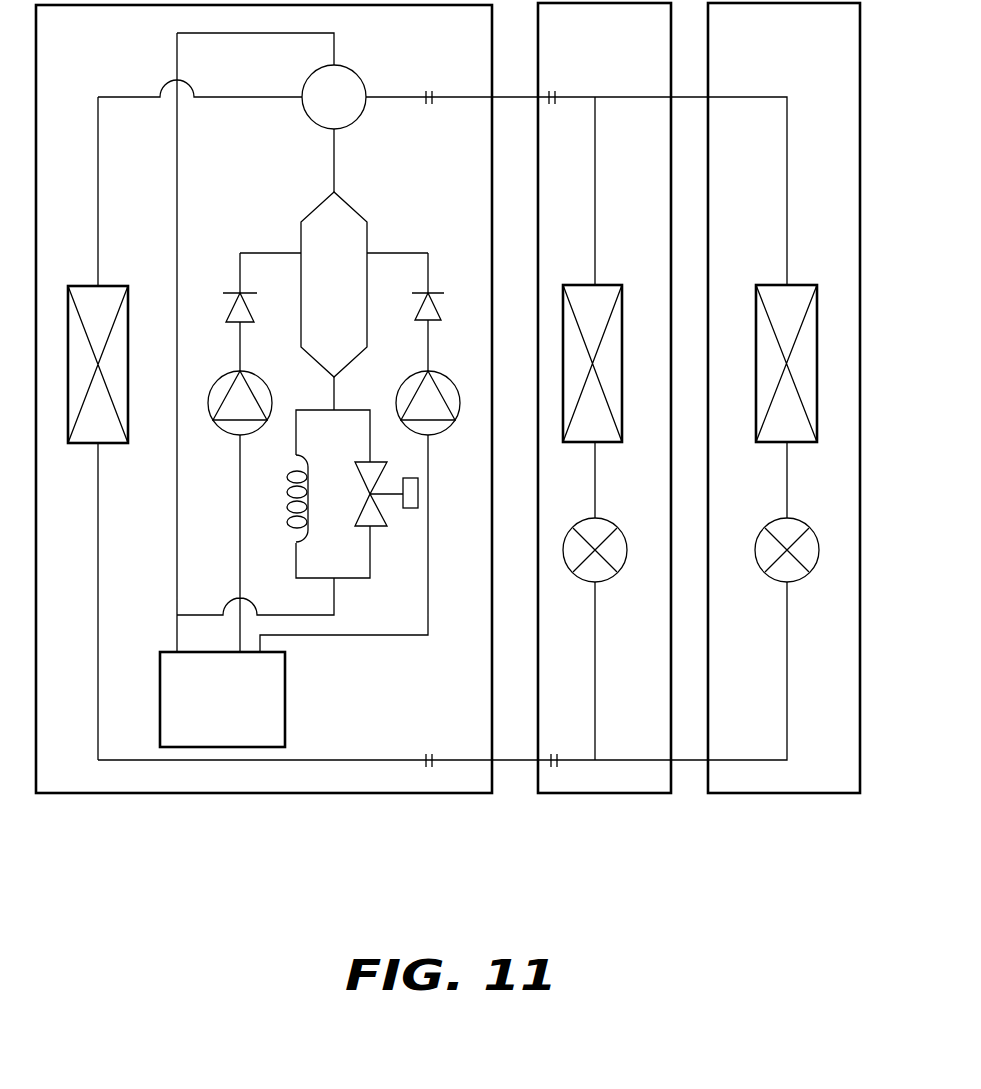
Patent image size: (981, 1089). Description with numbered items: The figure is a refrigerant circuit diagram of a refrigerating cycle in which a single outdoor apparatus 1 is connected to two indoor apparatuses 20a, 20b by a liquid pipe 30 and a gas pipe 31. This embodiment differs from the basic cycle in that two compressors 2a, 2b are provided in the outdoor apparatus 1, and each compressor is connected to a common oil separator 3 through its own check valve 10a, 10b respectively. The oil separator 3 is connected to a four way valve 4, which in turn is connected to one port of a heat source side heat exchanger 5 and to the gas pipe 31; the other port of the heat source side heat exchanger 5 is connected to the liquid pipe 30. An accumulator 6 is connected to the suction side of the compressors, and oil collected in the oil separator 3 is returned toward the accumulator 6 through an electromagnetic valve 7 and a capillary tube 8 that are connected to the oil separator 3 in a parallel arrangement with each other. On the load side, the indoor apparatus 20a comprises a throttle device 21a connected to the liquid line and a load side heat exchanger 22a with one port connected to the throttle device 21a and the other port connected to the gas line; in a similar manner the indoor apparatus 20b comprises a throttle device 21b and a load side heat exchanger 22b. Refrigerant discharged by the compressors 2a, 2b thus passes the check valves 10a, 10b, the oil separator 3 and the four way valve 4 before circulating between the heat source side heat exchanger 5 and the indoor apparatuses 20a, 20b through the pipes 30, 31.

The outdoor apparatus 1 is at (290, 797).
The compressor 2a is at (255, 371).
The compressor 2b is at (445, 381).
The oil separator 3 is at (352, 208).
The four way valve 4 is at (360, 83).
The heat source side heat exchanger 5 is at (130, 310).
The accumulator 6 is at (286, 705).
The electromagnetic valve 7 is at (410, 510).
The capillary tube 8 is at (288, 497).
The check valve 10a is at (237, 293).
The check valve 10b is at (431, 293).
The indoor apparatus 20a is at (606, 796).
The indoor apparatus 20b is at (796, 796).
The throttle device 21a is at (621, 528).
The throttle device 21b is at (813, 528).
The load side heat exchanger 22a is at (622, 290).
The load side heat exchanger 22b is at (814, 290).
The liquid pipe 30 is at (521, 757).
The gas pipe 31 is at (508, 100).